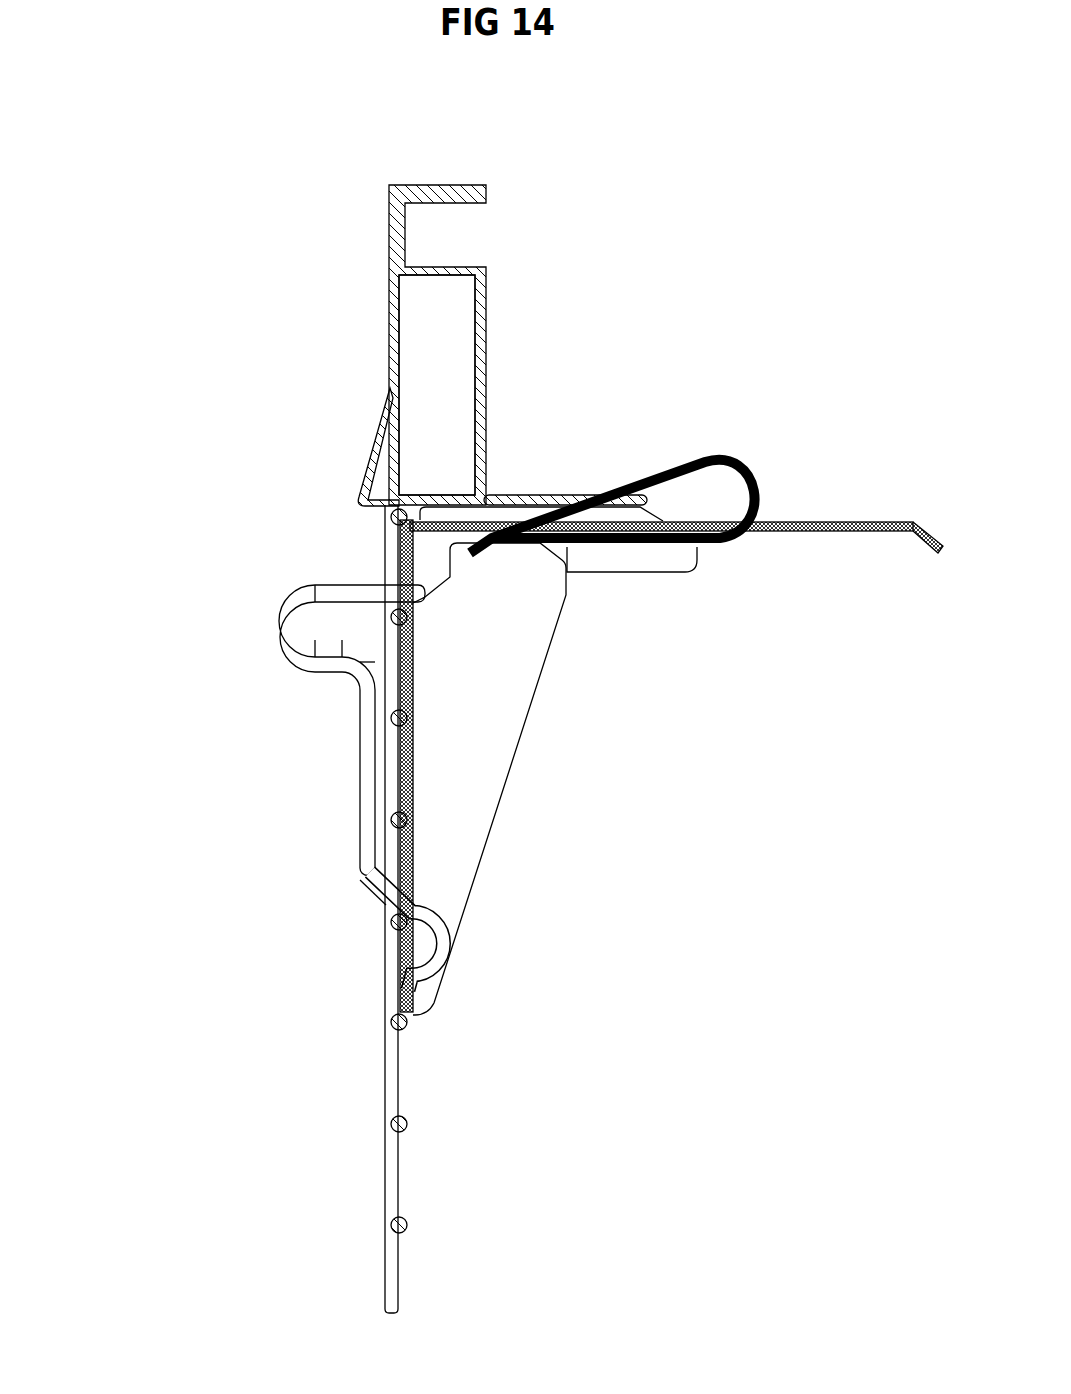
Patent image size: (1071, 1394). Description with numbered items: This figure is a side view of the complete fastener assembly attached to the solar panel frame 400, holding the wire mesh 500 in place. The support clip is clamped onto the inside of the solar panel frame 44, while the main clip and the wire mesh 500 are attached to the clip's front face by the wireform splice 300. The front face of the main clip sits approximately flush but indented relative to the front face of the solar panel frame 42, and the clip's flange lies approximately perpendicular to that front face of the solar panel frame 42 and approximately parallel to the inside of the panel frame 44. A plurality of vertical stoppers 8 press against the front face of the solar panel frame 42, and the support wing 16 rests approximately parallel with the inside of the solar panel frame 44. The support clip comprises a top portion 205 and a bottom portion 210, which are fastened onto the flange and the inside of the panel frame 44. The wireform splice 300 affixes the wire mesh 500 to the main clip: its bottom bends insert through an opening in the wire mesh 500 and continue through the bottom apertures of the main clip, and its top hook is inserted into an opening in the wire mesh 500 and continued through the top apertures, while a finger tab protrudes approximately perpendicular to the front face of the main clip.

The solar panel frame 400 is at (353, 192).
The front face of the solar panel frame 42 is at (383, 302).
The vertical stoppers 8 is at (352, 455).
The inside of the solar panel frame 44 is at (545, 488).
The top portion 205 is at (648, 468).
The bottom portion 210 is at (612, 547).
The wireform splice 300 is at (238, 758).
The support wing 16 is at (553, 680).
The wire mesh 500 is at (335, 1225).